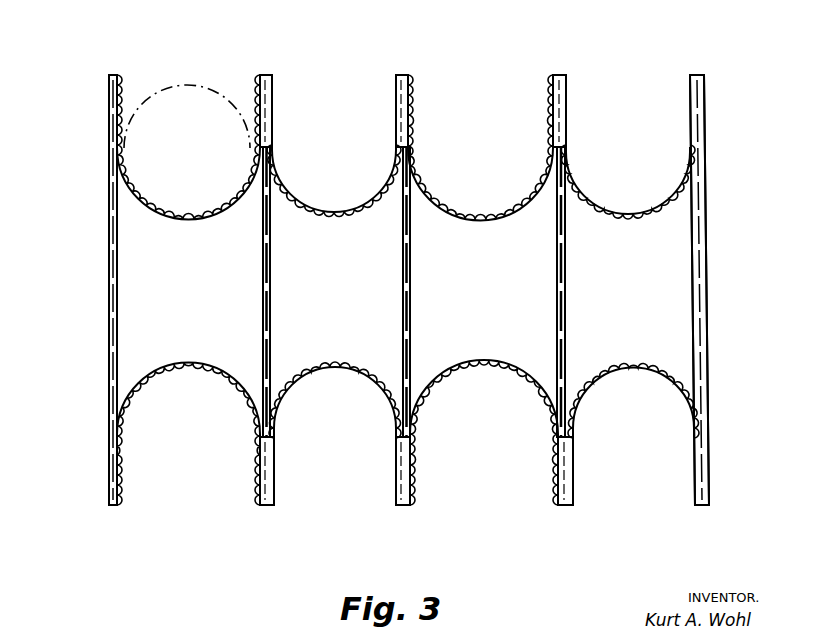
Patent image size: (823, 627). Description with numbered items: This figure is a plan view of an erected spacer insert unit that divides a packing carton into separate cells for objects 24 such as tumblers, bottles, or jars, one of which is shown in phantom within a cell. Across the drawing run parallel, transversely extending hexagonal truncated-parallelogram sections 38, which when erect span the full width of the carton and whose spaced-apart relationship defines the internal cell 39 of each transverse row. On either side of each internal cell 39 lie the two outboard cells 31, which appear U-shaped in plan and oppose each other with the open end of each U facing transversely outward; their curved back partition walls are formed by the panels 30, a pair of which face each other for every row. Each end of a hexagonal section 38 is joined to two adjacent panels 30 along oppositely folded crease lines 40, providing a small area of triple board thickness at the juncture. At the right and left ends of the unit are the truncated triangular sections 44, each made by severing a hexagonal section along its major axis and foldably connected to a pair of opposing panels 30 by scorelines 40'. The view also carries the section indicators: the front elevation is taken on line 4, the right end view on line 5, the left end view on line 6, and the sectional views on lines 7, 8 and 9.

The objects 24 is at (187, 116).
The panels 30 is at (200, 217).
The outboard cells 31 is at (347, 170).
The hexagonal truncated-parallelogram sections 38 is at (410, 285).
The internal cell 39 is at (347, 304).
The creaselines 40 is at (434, 290).
The scorelines 40' is at (719, 290).
The truncated triangular sections 44 is at (109, 330).
The line 4— 4 is at (135, 537).
The line 5— 5 is at (795, 52).
The line 6— 6 is at (25, 66).
The line 7— 7 is at (65, 293).
The line 8— 8 is at (628, 48).
The line 9— 9 is at (483, 50).